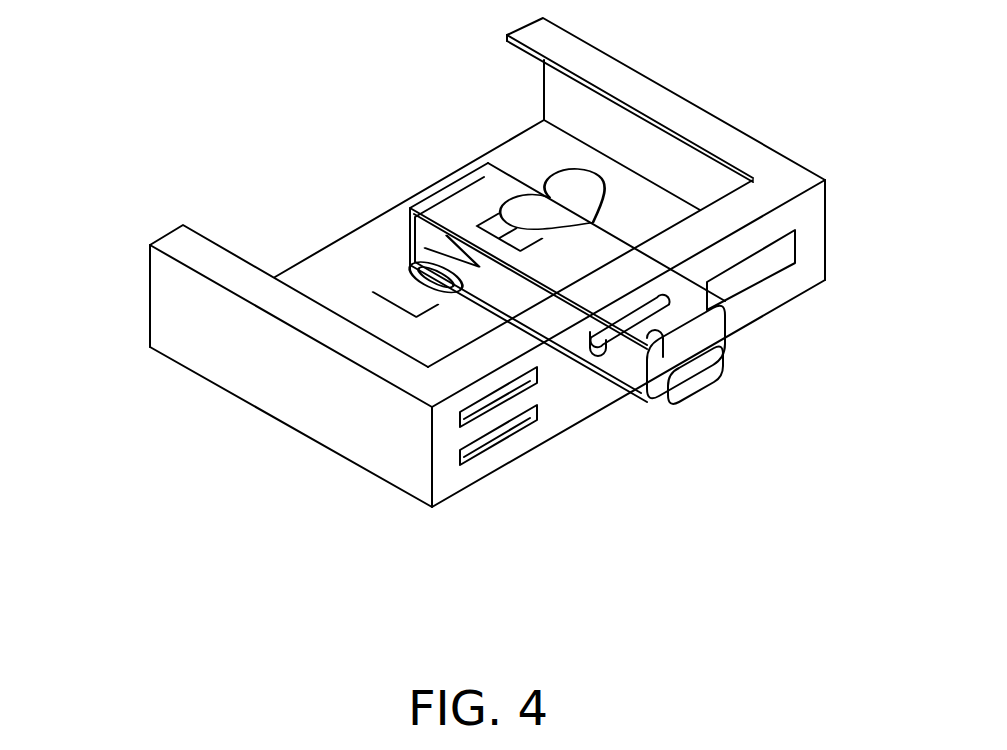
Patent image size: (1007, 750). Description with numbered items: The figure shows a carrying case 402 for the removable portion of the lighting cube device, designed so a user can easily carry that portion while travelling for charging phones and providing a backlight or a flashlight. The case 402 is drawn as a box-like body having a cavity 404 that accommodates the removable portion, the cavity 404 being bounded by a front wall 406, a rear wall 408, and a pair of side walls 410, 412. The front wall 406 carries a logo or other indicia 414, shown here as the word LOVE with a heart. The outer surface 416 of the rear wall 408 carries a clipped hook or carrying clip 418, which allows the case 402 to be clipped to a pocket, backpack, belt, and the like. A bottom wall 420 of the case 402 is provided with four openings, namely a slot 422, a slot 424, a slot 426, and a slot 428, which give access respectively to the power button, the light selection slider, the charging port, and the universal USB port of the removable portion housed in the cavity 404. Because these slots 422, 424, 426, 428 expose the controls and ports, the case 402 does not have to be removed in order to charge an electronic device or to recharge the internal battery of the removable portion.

The carrying case 402 is at (167, 154).
The cavity 404 is at (429, 151).
The front wall 406 is at (328, 279).
The rear wall 408 is at (365, 220).
The side wall 410 is at (172, 327).
The side wall 412 is at (657, 110).
The indicia 414 is at (411, 328).
The outer surface 416 is at (435, 522).
The carrying clip 418 is at (705, 393).
The bottom wall 420 is at (803, 282).
The slot 422 is at (523, 387).
The slot 424 is at (511, 432).
The slot 426 is at (620, 370).
The slot 428 is at (722, 292).